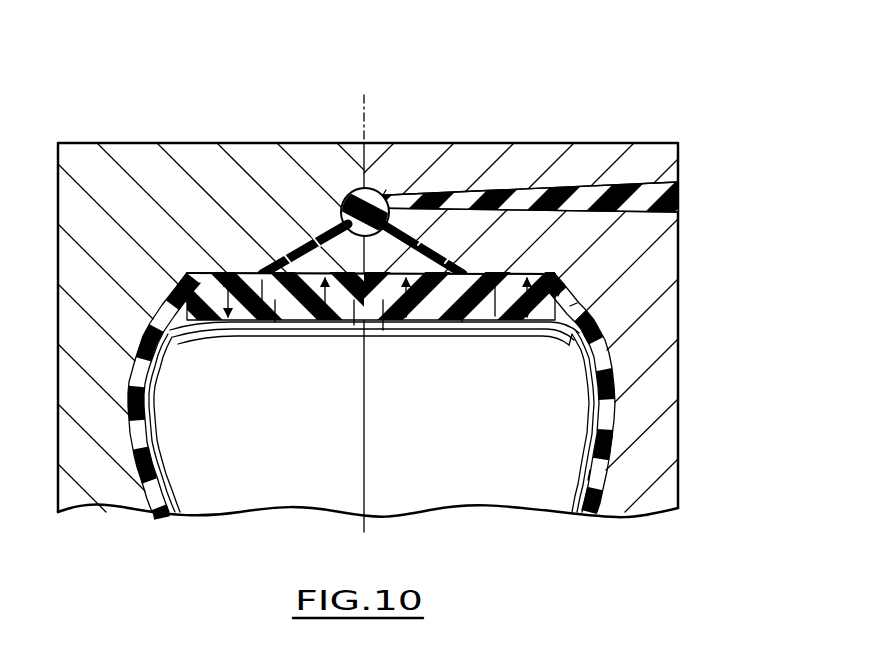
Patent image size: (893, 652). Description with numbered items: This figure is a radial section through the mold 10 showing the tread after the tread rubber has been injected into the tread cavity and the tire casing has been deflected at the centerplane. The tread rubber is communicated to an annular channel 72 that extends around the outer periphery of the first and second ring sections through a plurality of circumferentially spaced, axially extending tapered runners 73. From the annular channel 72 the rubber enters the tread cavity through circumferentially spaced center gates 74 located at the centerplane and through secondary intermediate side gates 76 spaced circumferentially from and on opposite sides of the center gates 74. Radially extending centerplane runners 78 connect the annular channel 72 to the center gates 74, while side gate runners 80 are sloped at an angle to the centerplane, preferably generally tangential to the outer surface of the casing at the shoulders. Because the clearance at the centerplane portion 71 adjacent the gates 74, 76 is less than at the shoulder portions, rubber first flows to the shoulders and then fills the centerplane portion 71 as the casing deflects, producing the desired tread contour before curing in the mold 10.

The mold 10 is at (607, 58).
The centerplane portion 71 is at (354, 325).
The annular channel 72 is at (383, 193).
The tapered runners 73 is at (562, 193).
The center gates 74 is at (383, 330).
The side gates 76 is at (275, 322).
The centerplane runners 78 is at (335, 238).
The side gate runners 80 is at (307, 248).